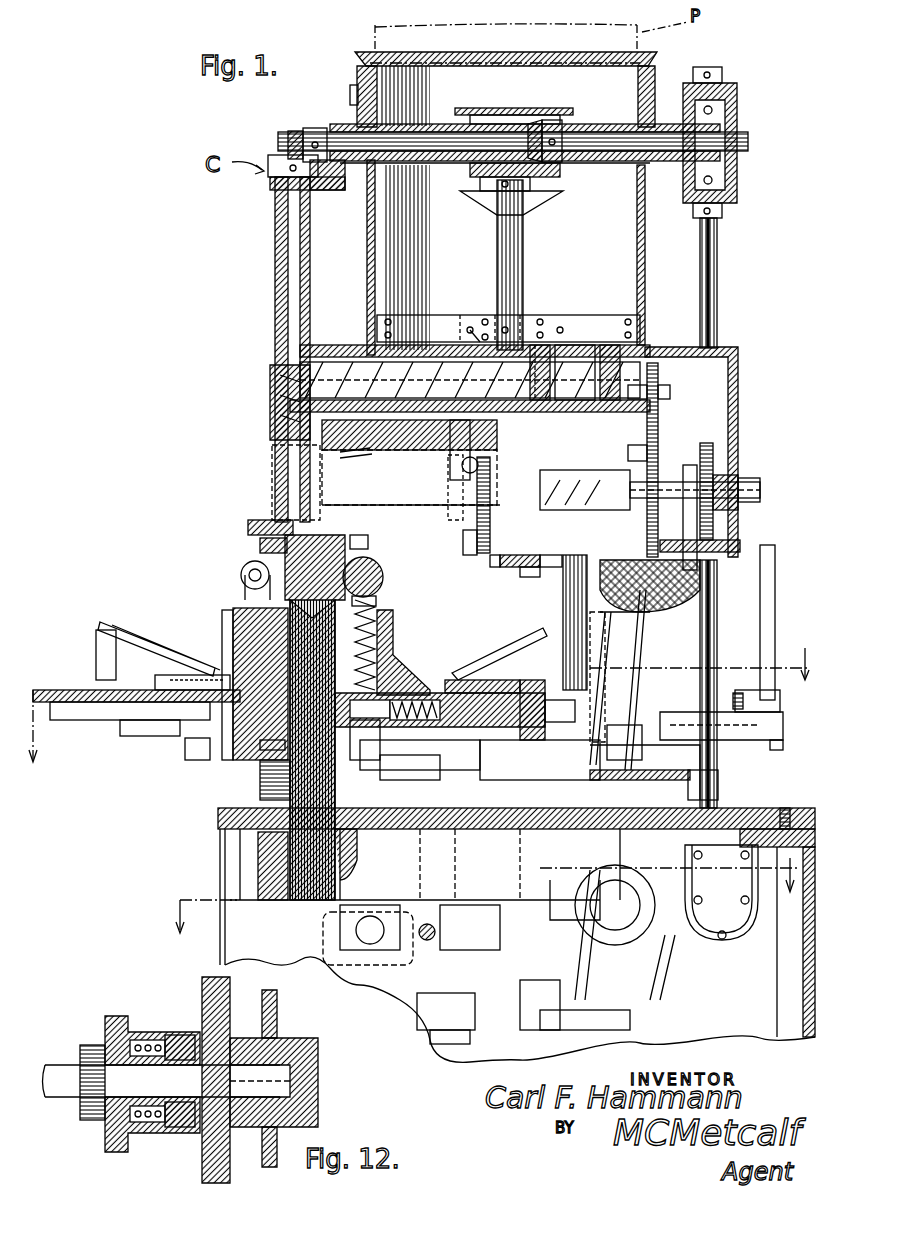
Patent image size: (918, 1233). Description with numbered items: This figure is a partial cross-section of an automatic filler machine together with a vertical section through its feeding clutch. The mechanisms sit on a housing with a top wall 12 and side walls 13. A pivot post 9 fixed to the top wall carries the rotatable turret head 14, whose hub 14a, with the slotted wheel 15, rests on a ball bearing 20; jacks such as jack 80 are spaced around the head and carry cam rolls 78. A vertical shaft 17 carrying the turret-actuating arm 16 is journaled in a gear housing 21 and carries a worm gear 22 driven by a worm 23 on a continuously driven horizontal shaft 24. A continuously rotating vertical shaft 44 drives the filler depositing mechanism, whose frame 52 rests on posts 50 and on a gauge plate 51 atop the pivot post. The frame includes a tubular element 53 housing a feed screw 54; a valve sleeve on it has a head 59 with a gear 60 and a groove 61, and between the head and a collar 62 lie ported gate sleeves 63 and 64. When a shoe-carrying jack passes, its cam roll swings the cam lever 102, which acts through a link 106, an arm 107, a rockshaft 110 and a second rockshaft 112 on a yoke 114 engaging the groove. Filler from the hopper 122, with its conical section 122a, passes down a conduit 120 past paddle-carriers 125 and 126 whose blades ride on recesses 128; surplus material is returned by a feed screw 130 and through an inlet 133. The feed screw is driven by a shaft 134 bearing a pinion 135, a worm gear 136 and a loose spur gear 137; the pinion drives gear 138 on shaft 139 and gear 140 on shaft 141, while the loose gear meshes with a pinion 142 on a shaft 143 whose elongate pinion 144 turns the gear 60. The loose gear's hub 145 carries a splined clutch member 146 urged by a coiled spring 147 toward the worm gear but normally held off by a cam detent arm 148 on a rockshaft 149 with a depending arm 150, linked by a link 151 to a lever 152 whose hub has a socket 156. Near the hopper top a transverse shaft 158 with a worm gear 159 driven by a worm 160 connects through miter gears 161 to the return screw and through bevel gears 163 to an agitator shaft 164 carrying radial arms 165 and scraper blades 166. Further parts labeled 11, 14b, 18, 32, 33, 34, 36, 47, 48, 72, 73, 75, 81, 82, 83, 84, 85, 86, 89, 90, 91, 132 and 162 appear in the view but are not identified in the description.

In FIG. 1, the pivot post 9 is at (300, 850).
In FIG. 1, the frame side wall 11 is at (795, 985).
In FIG. 1, the top wall 12 is at (225, 818).
In FIG. 1, the side walls 13 is at (222, 872).
In FIG. 1, the turret head 14 is at (95, 712).
In FIG. 1, the hub of the turret head 14a is at (240, 615).
In FIG. 1, the arm collar 14b is at (260, 548).
In FIG. 1, the slotted wheel 15 is at (195, 760).
In FIG. 1, the turret-actuating arm 16 is at (500, 770).
In FIG. 1, the vertical shaft 17 is at (458, 872).
In FIG. 1, the slide 18 is at (470, 762).
In FIG. 1, the ball bearing 20 is at (262, 785).
In FIG. 1, the gear housing 21 is at (330, 940).
In FIG. 1, the worm gear 22 is at (478, 950).
In FIG. 1, the worm 23 is at (368, 945).
In FIG. 1, the horizontal shaft 24 is at (427, 922).
In FIG. 1, the bracket 32 is at (418, 1002).
In FIG. 1, the plate 33 is at (475, 1044).
In FIG. 1, the bar 34 is at (595, 1020).
In FIG. 1, the bracket 36 is at (567, 914).
In FIG. 1, the vertical shaft 44 is at (718, 230).
In FIG. 1, the pulley 47 is at (615, 932).
In FIG. 1, the belt guard 48 is at (668, 962).
In FIG. 1, the posts 50 is at (563, 606).
In FIG. 1, the gauge plate 51 is at (248, 527).
In FIG. 1, the frame 52 is at (272, 372).
In FIG. 12, the frame 52 is at (288, 1038).
In FIG. 1, the tubular frame element 53 is at (490, 470).
In FIG. 1, the feed screw 54 is at (550, 562).
In FIG. 1, the head 59 is at (474, 455).
In FIG. 1, the gear 60 is at (468, 556).
In FIG. 1, the circumferential groove 61 is at (458, 520).
In FIG. 1, the collar 62 is at (300, 492).
In FIG. 1, the ported gate sleeve 63 is at (338, 482).
In FIG. 1, the ported gate sleeve 64 is at (409, 439).
In FIG. 1, the lever 72 is at (362, 452).
In FIG. 1, the block 73 is at (528, 690).
In FIG. 1, the spring 75 is at (205, 680).
In FIG. 1, the cam rolls 78 is at (95, 736).
In FIG. 1, the jack 80 is at (110, 624).
In FIG. 1, the roller 81 is at (241, 570).
In FIG. 1, the roller pin 82 is at (250, 590).
In FIG. 1, the spring 83 is at (380, 640).
In FIG. 1, the plunger 84 is at (392, 612).
In FIG. 1, the housing 85 is at (375, 692).
In FIG. 1, the lever 86 is at (497, 670).
In FIG. 1, the spindle bracket 89 is at (366, 758).
In FIG. 1, the spring 90 is at (415, 692).
In FIG. 1, the pin 91 is at (275, 750).
In FIG. 1, the cam lever 102 is at (630, 740).
In FIG. 1, the link 106 is at (600, 690).
In FIG. 1, the arm 107 is at (645, 640).
In FIG. 1, the horizontal rockshaft 110 is at (650, 608).
In FIG. 1, the second horizontal rockshaft 112 is at (611, 677).
In FIG. 1, the yoke 114 is at (458, 432).
In FIG. 1, the conduit 120 is at (538, 345).
In FIG. 1, the hopper 122 is at (360, 66).
In FIG. 1, the conical section 122a is at (487, 50).
In FIG. 1, the paddle-carrier 125 is at (570, 345).
In FIG. 1, the paddle-carrier 126 is at (588, 490).
In FIG. 1, the recesses 128 is at (540, 345).
In FIG. 1, the feed screw 130 is at (282, 407).
In FIG. 1, the feed screw 132 is at (352, 368).
In FIG. 1, the inlet 133 is at (420, 357).
In FIG. 1, the shaft 134 is at (560, 490).
In FIG. 12, the shaft 134 is at (167, 1081).
In FIG. 12, the pinion 135 is at (92, 1045).
In FIG. 1, the worm gear 136 is at (735, 470).
In FIG. 12, the worm gear 136 is at (220, 995).
In FIG. 12, the spur gear 137 is at (120, 1018).
In FIG. 1, the gear 138 is at (650, 432).
In FIG. 1, the shaft 139 is at (655, 450).
In FIG. 1, the gear 140 is at (652, 395).
In FIG. 1, the shaft 141 is at (650, 412).
In FIG. 1, the pinion 142 is at (650, 590).
In FIG. 1, the horizontal shaft 143 is at (528, 578).
In FIG. 1, the elongate pinion 144 is at (495, 560).
In FIG. 12, the elongate hub 145 is at (152, 1125).
In FIG. 1, the clutch member 146 is at (700, 480).
In FIG. 12, the clutch member 146 is at (178, 1035).
In FIG. 12, the coiled spring 147 is at (146, 1038).
In FIG. 1, the cam detent arm 148 is at (715, 545).
In FIG. 1, the horizontal rockshaft 149 is at (720, 560).
In FIG. 1, the depending arm 150 is at (773, 603).
In FIG. 1, the link 151 is at (758, 690).
In FIG. 1, the lever 152 is at (782, 722).
In FIG. 1, the socket 156 is at (700, 780).
In FIG. 1, the horizontal transverse shaft 158 is at (605, 135).
In FIG. 1, the worm gear 159 is at (725, 100).
In FIG. 1, the worm 160 is at (722, 185).
In FIG. 1, the miter gears 161 is at (300, 140).
In FIG. 1, the column 162 is at (290, 243).
In FIG. 1, the bevel gears 163 is at (525, 150).
In FIG. 1, the vertical shaft 164 is at (497, 214).
In FIG. 1, the radial arms 165 is at (466, 312).
In FIG. 1, the scraper blade 166 is at (375, 233).